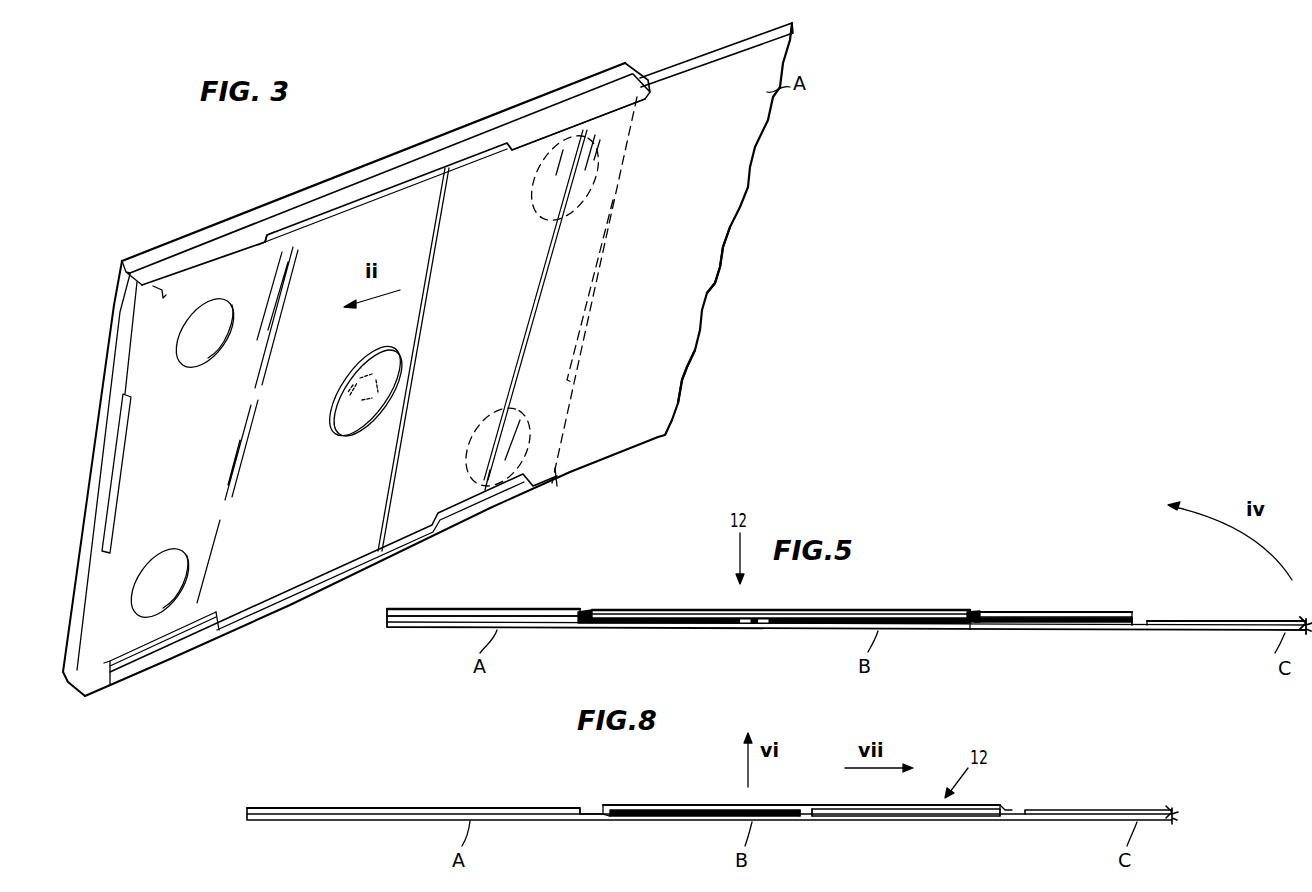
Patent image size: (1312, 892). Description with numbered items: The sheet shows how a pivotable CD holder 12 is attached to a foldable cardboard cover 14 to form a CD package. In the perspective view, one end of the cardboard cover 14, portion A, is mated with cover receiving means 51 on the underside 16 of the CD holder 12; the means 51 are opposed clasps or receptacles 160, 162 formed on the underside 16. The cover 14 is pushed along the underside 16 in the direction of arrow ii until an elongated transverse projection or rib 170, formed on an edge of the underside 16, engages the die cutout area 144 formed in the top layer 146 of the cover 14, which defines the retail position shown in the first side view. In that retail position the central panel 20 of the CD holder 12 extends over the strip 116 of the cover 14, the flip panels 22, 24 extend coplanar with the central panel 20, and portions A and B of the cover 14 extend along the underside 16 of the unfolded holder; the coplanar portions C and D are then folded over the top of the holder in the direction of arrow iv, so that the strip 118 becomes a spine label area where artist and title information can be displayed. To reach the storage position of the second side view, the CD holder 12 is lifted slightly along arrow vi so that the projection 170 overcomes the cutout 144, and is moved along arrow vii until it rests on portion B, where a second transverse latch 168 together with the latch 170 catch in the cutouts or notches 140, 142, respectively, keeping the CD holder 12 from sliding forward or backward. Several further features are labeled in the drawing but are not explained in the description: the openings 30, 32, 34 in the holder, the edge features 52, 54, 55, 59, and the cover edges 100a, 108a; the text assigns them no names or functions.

In FIG. 3, the CD holder 12 is at (352, 136).
In FIG. 3, the cover 14 is at (773, 173).
In FIG. 5, the cover 14 is at (826, 642).
In FIG. 8, the cover 14 is at (675, 824).
In FIG. 3, the underside 16 is at (322, 583).
In FIG. 5, the central panel 20 is at (665, 608).
In FIG. 8, the central panel 20 is at (636, 804).
In FIG. 3, the flip panel 22 is at (233, 212).
In FIG. 5, the flip panel 22 is at (462, 606).
In FIG. 3, the flip panel 24 is at (461, 124).
In FIG. 5, the flip panel 24 is at (1070, 611).
In FIG. 3, the central aperture 30 is at (343, 418).
In FIG. 3, the lower opening 32 is at (166, 555).
In FIG. 3, the upper opening 34 is at (203, 369).
In FIG. 3, the cover receiving means 51 is at (184, 665).
In FIG. 3, the side rail 52 is at (98, 453).
In FIG. 5, the side rail 52 is at (585, 608).
In FIG. 5, the rail junction 54 is at (975, 611).
In FIG. 3, the lower notch 55 is at (128, 651).
In FIG. 3, the upper notch 59 is at (157, 300).
In FIG. 3, the panel edge 100a is at (710, 293).
In FIG. 3, the panel edge 108a is at (668, 377).
In FIG. 5, the strip 116 is at (752, 629).
In FIG. 8, the strip 116 is at (592, 823).
In FIG. 5, the strip 118 is at (1143, 620).
In FIG. 8, the strip 118 is at (1013, 822).
In FIG. 8, the cutout 140 is at (618, 822).
In FIG. 5, the cutout 142 is at (1128, 633).
In FIG. 8, the cutout 142 is at (990, 822).
In FIG. 5, the die cutout area 144 is at (968, 632).
In FIG. 8, the die cutout area 144 is at (812, 822).
In FIG. 5, the top layer 146 is at (1196, 620).
In FIG. 3, the clasp 160 is at (233, 258).
In FIG. 3, the clasp 162 is at (220, 625).
In FIG. 3, the second transverse latch 168 is at (124, 464).
In FIG. 5, the second transverse latch 168 is at (598, 627).
In FIG. 8, the second transverse latch 168 is at (603, 805).
In FIG. 3, the transverse projection 170 is at (600, 270).
In FIG. 5, the transverse projection 170 is at (962, 627).
In FIG. 8, the transverse projection 170 is at (1005, 808).